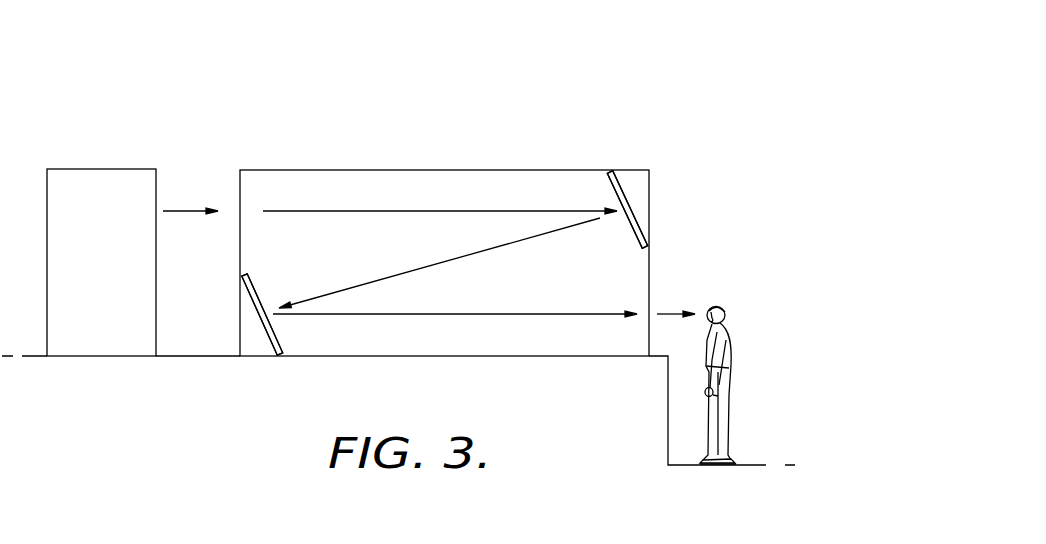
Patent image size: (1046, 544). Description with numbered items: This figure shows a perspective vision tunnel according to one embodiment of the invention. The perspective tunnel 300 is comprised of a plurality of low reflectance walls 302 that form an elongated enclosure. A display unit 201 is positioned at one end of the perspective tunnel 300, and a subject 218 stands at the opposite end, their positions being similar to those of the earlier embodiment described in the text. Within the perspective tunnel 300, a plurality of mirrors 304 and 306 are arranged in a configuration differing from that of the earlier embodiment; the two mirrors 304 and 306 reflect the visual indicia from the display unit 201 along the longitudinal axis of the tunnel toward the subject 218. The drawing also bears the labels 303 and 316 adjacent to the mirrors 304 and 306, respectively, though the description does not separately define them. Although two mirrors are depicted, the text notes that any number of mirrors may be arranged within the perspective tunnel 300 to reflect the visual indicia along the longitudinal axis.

The perspective tunnel 300 is at (125, 80).
The display unit 201 is at (98, 169).
The low reflectance walls 302 is at (425, 356).
The first mirror assembly 303 is at (240, 312).
The mirror 304 is at (283, 347).
The mirror 306 is at (608, 178).
The second mirror assembly 316 is at (649, 193).
The subject 218 is at (733, 340).